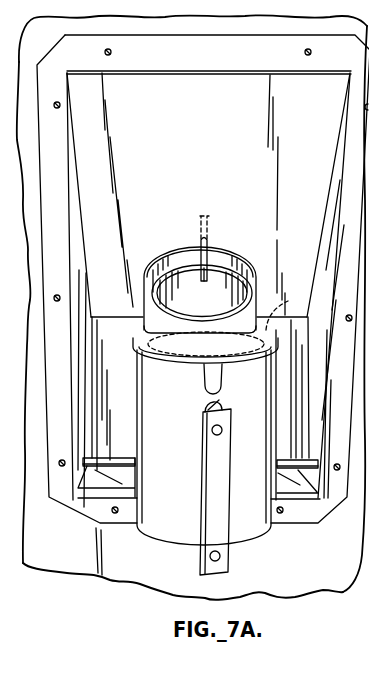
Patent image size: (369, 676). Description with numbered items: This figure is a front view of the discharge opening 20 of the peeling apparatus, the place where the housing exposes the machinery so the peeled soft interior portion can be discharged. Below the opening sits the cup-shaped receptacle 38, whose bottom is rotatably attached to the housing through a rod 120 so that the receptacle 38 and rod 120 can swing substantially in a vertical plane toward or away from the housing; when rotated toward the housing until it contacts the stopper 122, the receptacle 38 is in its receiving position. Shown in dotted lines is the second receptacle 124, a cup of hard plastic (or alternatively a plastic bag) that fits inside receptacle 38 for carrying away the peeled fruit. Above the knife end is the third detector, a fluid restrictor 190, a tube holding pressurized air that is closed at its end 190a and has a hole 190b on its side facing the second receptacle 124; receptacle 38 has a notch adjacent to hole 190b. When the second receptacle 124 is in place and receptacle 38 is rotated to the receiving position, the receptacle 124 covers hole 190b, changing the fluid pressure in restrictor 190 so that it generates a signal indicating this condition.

The discharge opening 20 is at (152, 316).
The receptacle 38 is at (240, 531).
The rod 120 is at (101, 466).
The stopper 122 is at (138, 346).
The second receptacle 124 is at (271, 316).
The fluid restrictor 190 is at (199, 241).
The closed end 190a is at (205, 280).
The hole 190b is at (207, 253).